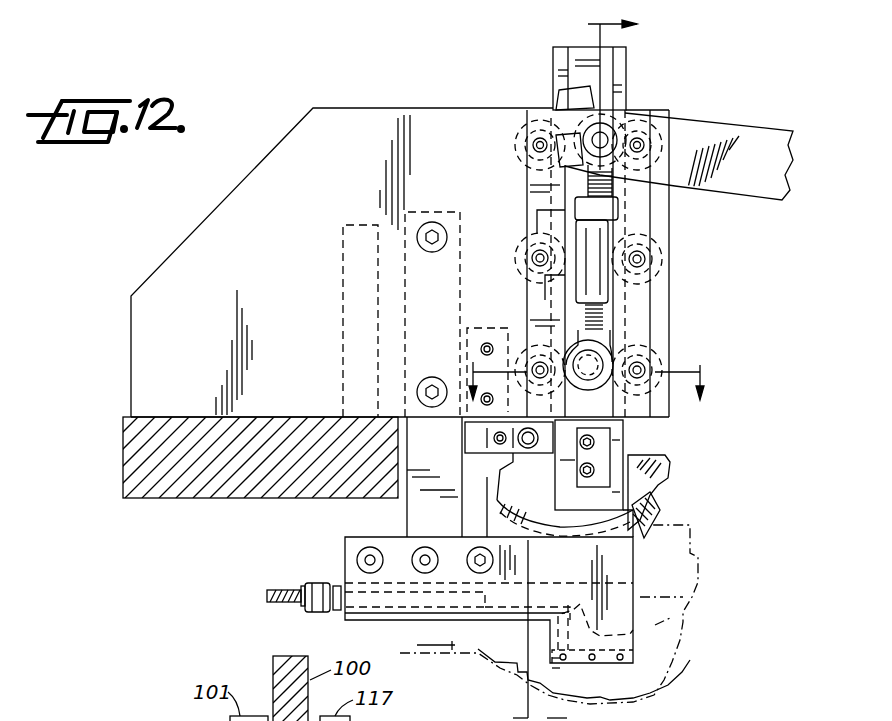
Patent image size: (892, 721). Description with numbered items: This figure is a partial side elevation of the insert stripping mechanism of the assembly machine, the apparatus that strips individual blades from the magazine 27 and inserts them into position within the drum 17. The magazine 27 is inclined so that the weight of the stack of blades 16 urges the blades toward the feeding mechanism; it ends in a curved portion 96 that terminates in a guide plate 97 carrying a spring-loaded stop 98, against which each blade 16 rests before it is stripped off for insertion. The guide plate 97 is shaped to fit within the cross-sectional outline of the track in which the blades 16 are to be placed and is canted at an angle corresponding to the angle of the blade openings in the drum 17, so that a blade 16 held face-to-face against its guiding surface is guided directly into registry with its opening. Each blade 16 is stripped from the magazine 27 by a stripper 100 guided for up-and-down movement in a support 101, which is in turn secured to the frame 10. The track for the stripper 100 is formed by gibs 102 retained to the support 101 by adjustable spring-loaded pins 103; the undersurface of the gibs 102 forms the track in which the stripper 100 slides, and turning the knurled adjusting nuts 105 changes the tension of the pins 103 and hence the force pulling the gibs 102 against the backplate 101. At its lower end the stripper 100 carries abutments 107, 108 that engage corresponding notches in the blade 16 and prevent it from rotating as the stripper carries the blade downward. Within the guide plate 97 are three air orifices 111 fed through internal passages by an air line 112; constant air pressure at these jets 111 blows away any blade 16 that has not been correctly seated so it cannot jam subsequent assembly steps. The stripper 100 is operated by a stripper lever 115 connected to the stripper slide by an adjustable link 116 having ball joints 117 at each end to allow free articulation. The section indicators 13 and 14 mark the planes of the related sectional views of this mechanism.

The frame 10 is at (142, 502).
The section line 13 is at (578, 370).
The section line 14 is at (561, 368).
The blade 16 is at (668, 460).
The drum 17 is at (708, 573).
The magazine 27 is at (662, 502).
The curved portion 96 is at (633, 528).
The guide plate 97 is at (622, 572).
The spring-loaded stop 98 is at (500, 470).
The stripper 100 is at (607, 75).
The support 101 is at (378, 118).
The gibs 102 is at (518, 190).
The adjustable spring-loaded pins 103 is at (532, 148).
The knurled adjusting nuts 105 is at (515, 145).
The abutment 107 is at (553, 478).
The abutment 108 is at (627, 446).
The air orifices 111 is at (566, 659).
The air line 112 is at (285, 590).
The stripper lever 115 is at (715, 125).
The adjustable link 116 is at (575, 302).
The ball joints 117 is at (630, 106).